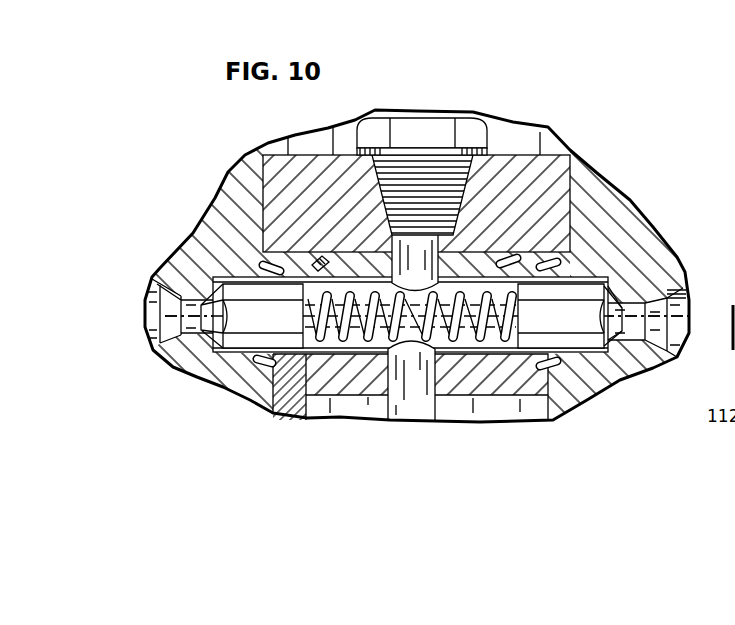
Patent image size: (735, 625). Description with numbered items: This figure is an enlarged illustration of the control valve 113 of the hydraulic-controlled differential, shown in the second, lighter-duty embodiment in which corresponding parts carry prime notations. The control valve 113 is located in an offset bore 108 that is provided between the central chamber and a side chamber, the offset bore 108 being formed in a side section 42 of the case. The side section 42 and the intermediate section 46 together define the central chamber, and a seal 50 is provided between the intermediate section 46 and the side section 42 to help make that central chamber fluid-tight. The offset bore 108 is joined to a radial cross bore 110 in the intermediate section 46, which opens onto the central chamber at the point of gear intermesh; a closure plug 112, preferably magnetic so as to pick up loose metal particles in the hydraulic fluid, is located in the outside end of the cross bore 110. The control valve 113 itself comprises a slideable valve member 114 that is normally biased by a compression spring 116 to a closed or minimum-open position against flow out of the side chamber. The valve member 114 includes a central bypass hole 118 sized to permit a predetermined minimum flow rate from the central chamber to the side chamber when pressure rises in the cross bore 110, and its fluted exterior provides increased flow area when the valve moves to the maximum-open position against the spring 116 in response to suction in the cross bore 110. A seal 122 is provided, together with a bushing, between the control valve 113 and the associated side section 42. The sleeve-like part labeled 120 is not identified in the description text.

The control valve 113 is at (556, 116).
The closure plug 112 is at (475, 138).
The compression spring 116 is at (432, 293).
The intermediate section 46 is at (540, 190).
The side section 42 is at (614, 228).
The seal 50 is at (291, 267).
The offset bore 108 is at (674, 280).
The sleeve 120 is at (593, 285).
The central bypass hole 118 is at (622, 333).
The valve member 114 is at (602, 345).
The seal 122 is at (264, 356).
The radial cross bore 110 is at (395, 383).